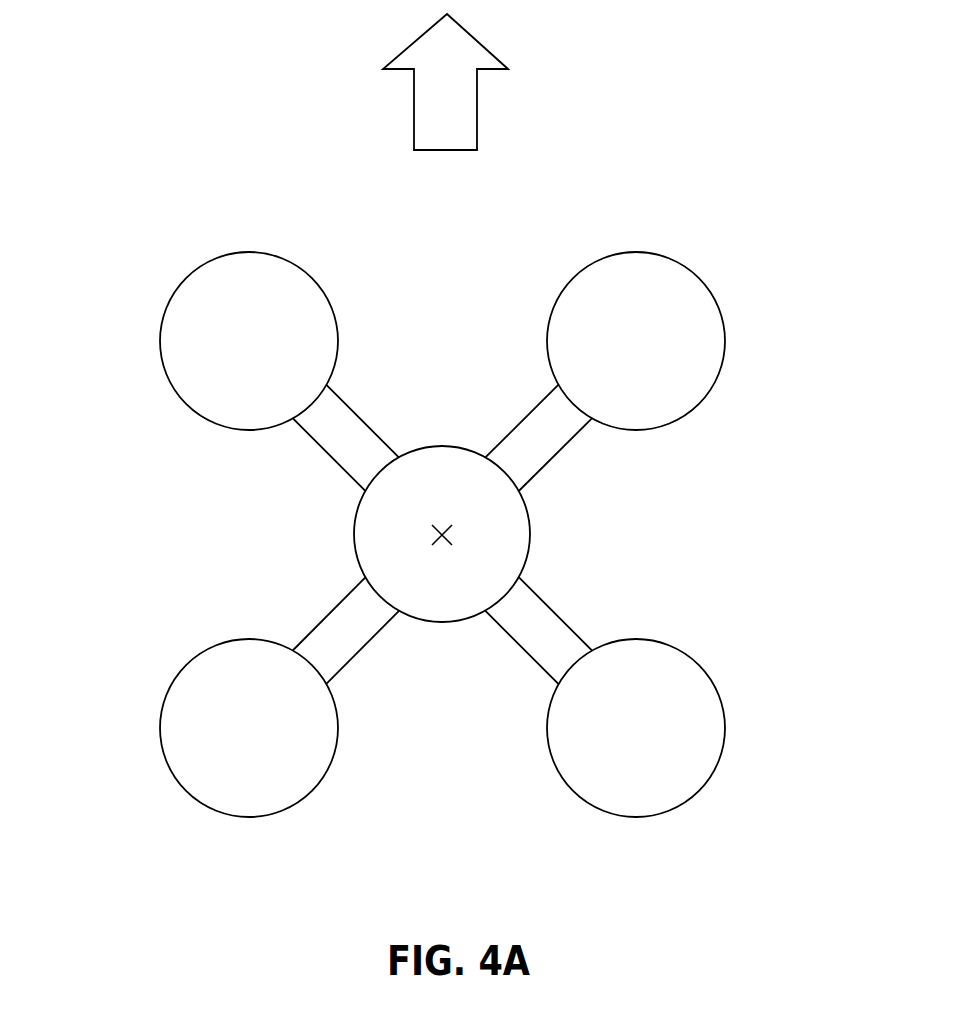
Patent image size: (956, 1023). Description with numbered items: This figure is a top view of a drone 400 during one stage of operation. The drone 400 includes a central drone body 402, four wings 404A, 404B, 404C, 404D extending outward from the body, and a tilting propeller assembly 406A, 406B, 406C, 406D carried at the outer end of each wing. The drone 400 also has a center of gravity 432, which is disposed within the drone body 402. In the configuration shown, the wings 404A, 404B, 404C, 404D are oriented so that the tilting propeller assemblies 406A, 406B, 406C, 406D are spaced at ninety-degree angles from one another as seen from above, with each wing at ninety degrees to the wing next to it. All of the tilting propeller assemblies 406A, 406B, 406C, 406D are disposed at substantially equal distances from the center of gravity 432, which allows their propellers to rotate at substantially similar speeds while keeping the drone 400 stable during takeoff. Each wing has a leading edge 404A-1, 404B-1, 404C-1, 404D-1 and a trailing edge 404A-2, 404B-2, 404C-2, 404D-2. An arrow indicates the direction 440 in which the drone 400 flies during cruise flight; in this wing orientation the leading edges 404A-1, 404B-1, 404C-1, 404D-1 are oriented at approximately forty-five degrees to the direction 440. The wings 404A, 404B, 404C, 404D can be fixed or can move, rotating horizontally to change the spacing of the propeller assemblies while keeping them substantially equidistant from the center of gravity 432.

The drone 400 is at (162, 147).
The direction 440 is at (483, 110).
The drone body 402 is at (447, 625).
The center of gravity 432 is at (433, 536).
The wing 404A is at (333, 411).
The leading edge 404A-1 is at (372, 425).
The trailing edge 404A-2 is at (320, 448).
The wing 404B is at (570, 423).
The leading edge 404B-1 is at (522, 412).
The trailing edge 404B-2 is at (543, 475).
The wing 404C is at (592, 666).
The leading edge 404C-1 is at (578, 632).
The trailing edge 404C-2 is at (525, 655).
The wing 404D is at (284, 661).
The leading edge 404D-1 is at (302, 633).
The trailing edge 404D-2 is at (365, 650).
The tilting propeller assembly 406A is at (163, 317).
The tilting propeller assembly 406B is at (727, 318).
The tilting propeller assembly 406C is at (683, 805).
The tilting propeller assembly 406D is at (167, 768).